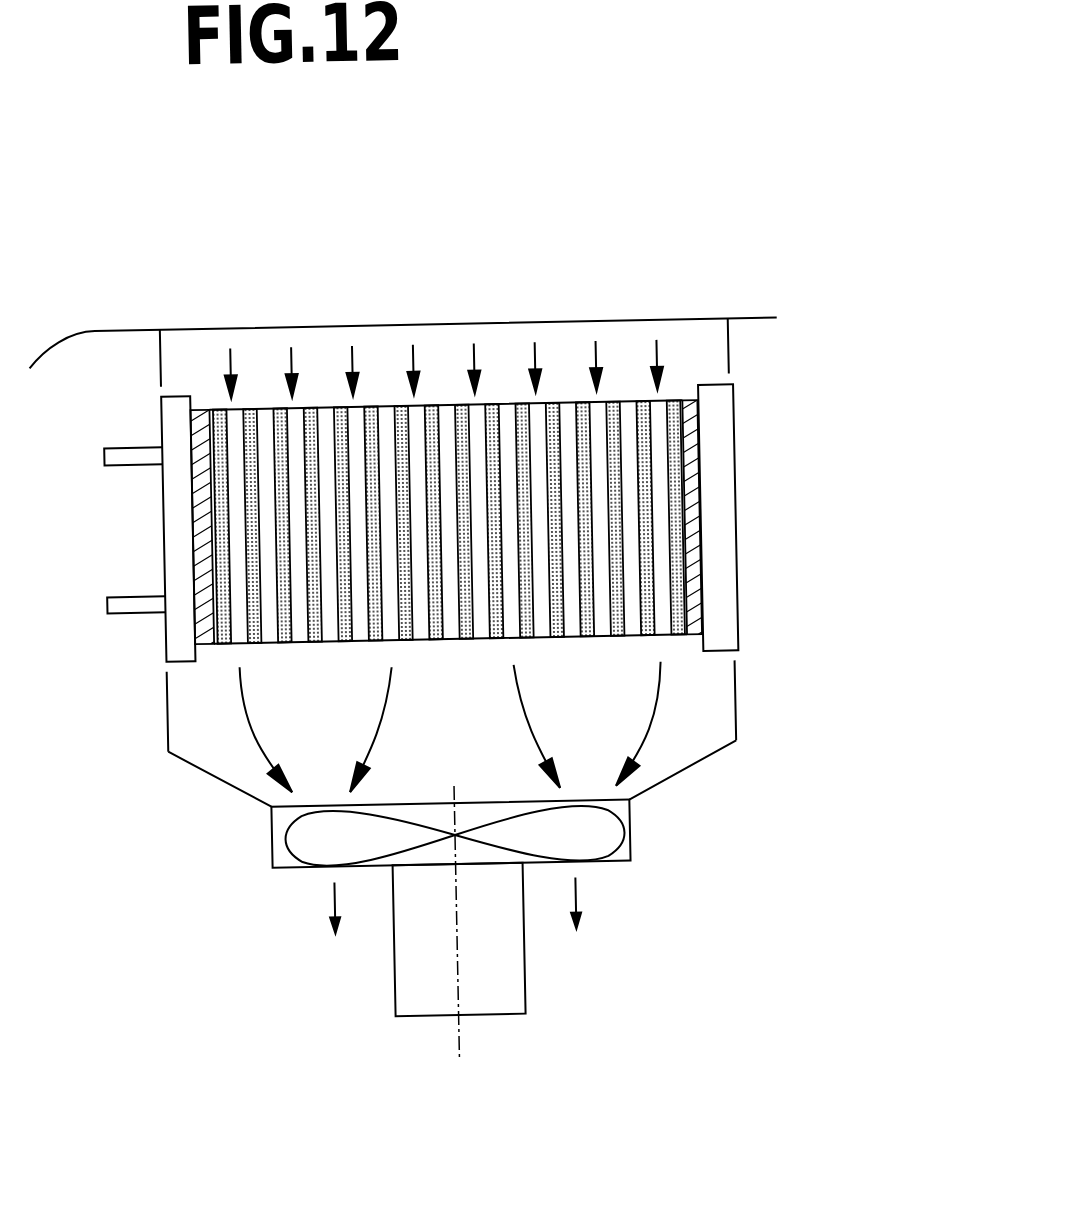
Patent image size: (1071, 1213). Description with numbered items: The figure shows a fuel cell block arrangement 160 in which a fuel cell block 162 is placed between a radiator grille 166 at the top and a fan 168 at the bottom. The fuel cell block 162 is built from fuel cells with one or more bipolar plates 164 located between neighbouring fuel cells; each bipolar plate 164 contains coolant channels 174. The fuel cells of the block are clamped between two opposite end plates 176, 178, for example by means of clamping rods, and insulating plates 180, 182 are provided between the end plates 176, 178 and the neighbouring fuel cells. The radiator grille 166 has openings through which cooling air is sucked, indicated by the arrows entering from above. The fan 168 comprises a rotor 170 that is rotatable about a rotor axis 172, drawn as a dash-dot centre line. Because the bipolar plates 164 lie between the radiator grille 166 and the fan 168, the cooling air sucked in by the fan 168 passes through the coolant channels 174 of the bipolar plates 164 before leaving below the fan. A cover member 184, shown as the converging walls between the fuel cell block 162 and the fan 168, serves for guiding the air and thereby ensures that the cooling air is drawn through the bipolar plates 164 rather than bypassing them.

The fuel cell block arrangement 160 is at (776, 501).
The fuel cell block 162 is at (730, 418).
The bipolar plate 164 is at (475, 639).
The radiator grille 166 is at (531, 324).
The fan 168 is at (622, 866).
The rotor 170 is at (328, 848).
The rotor axis 172 is at (454, 1035).
The coolant channels 174 is at (335, 639).
The end plate 176 is at (182, 491).
The end plate 178 is at (731, 568).
The insulating plate 180 is at (211, 552).
The insulating plate 182 is at (711, 612).
The cover member 184 is at (696, 772).